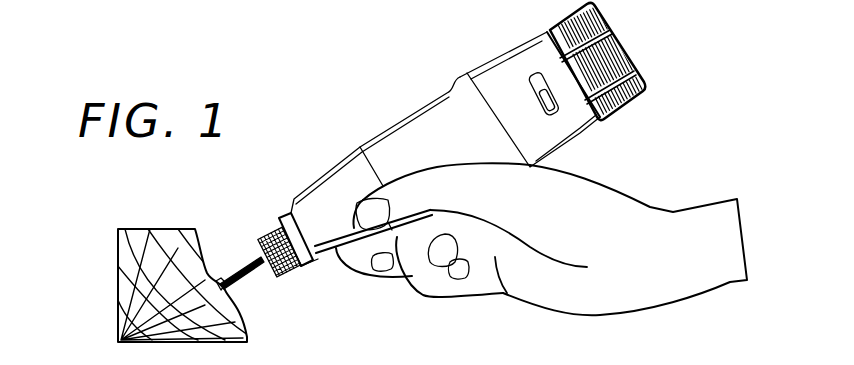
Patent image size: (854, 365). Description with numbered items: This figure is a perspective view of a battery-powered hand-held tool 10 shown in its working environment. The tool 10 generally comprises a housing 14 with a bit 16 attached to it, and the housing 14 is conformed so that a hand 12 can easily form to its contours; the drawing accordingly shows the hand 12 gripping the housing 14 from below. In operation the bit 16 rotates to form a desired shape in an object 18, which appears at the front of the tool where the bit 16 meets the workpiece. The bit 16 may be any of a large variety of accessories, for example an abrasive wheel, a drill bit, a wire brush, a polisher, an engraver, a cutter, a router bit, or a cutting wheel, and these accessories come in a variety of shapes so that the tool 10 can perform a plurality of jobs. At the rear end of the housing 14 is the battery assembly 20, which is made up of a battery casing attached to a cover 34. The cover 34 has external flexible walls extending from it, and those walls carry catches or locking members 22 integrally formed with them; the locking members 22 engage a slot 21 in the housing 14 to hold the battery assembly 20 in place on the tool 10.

The hand-held tool 10 is at (443, 64).
The hand 12 is at (678, 211).
The housing 14 is at (393, 122).
The bit 16 is at (219, 280).
The object 18 is at (126, 268).
The battery assembly 20 is at (715, 360).
The slot 21 is at (543, 78).
The locking members 22 is at (582, 139).
The cover 34 is at (623, 55).